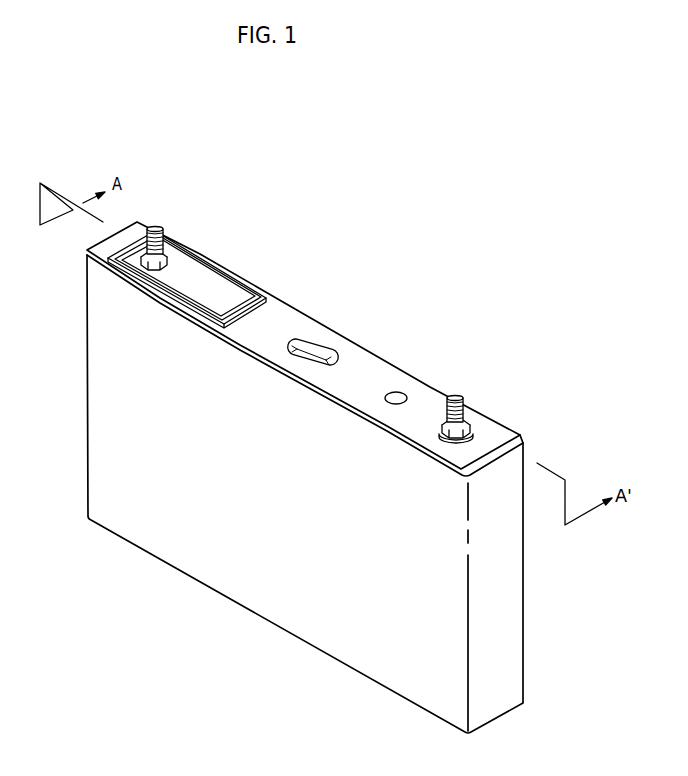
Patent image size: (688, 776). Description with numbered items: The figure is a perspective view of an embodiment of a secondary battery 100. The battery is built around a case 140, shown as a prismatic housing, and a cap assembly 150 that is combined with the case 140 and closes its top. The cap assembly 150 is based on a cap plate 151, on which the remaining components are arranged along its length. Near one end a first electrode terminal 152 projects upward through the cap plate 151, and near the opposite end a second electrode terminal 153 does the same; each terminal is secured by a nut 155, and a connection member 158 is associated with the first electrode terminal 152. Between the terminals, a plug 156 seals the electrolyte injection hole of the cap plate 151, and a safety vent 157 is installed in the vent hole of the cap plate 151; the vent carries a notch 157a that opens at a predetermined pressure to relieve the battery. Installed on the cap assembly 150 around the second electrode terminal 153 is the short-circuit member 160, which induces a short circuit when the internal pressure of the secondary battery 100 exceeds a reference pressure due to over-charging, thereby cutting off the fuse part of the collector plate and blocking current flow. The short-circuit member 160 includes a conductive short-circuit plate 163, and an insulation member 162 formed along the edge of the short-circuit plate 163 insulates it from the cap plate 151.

The secondary battery 100 is at (340, 207).
The case 140 is at (261, 603).
The cap assembly 150 is at (287, 320).
The cap plate 151 is at (282, 318).
The first electrode terminal 152 is at (456, 396).
The second electrode terminal 153 is at (152, 227).
The nut 155 is at (134, 267).
The plug 156 is at (399, 393).
The safety vent 157 is at (323, 348).
The notch 157a is at (327, 350).
The connection member 158 is at (472, 429).
The short-circuit member 160 is at (207, 275).
The insulation member 162 is at (232, 282).
The short-circuit plate 163 is at (180, 262).